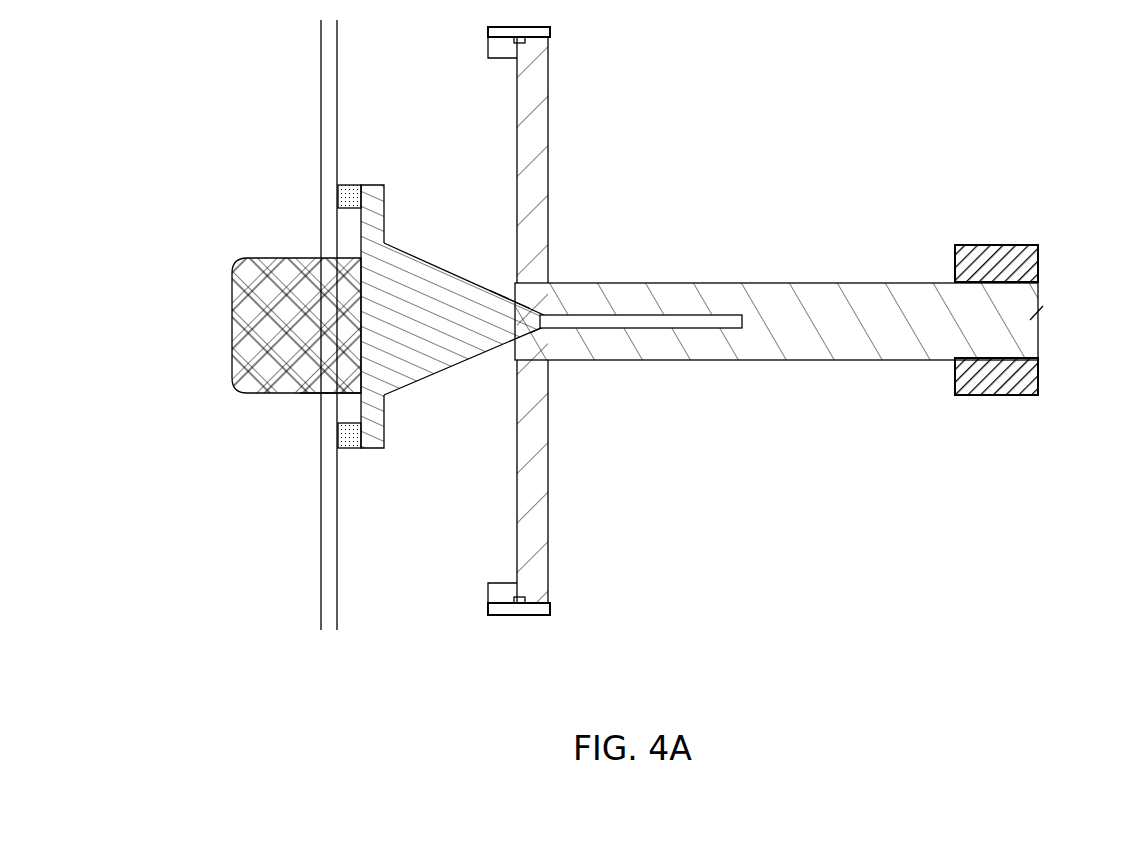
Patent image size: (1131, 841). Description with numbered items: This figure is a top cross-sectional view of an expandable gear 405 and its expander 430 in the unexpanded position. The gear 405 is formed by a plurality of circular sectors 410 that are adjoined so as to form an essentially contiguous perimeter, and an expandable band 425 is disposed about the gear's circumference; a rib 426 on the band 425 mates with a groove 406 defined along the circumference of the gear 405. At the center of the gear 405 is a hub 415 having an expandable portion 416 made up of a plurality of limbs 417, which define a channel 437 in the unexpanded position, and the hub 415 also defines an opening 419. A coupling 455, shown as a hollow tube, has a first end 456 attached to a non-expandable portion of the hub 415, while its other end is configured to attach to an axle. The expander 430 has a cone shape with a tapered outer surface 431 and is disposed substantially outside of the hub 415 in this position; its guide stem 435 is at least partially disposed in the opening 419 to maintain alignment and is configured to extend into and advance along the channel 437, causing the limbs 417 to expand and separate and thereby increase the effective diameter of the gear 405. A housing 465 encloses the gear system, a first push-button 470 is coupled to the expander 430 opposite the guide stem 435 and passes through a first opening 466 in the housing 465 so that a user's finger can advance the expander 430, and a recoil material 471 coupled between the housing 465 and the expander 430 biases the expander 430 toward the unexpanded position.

The expandable gear 405 is at (533, 85).
The groove 406 is at (513, 42).
The plurality of circular sectors 410 is at (525, 508).
The hub 415 is at (783, 417).
The expandable portion 416 is at (659, 297).
The plurality of limbs 417 is at (853, 298).
The opening 419 is at (518, 302).
The expandable band 425 is at (545, 609).
The rib 426 is at (523, 600).
The expander 430 is at (403, 337).
The tapered outer surface 431 is at (402, 253).
The guide stem 435 is at (542, 326).
The channel 437 is at (697, 322).
The coupling 455 is at (990, 262).
The first end 456 is at (968, 412).
The housing 465 is at (333, 587).
The first opening 466 is at (320, 392).
The first push-button 470 is at (277, 303).
The recoil material 471 is at (352, 438).